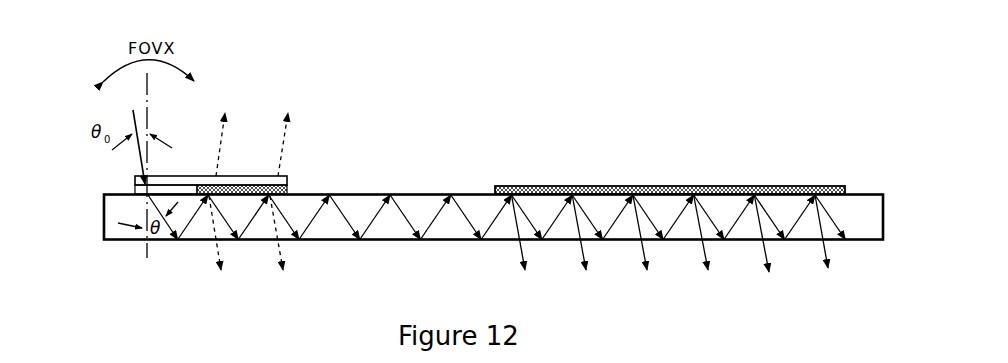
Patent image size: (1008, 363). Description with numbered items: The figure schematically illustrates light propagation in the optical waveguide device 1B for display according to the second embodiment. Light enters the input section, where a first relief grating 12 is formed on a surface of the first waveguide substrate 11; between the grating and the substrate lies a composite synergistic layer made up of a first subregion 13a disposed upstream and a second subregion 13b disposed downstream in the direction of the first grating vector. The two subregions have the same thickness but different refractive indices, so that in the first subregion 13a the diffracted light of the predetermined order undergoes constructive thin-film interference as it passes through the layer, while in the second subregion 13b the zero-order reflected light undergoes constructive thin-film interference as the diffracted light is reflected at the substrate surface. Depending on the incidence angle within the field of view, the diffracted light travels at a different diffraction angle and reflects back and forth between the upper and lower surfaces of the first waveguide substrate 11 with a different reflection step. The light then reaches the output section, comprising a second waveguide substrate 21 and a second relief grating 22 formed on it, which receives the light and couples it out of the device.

The optical waveguide device 1B is at (450, 90).
The first waveguide substrate 11 is at (340, 240).
The first relief grating 12 is at (242, 176).
The first subregion 13a is at (132, 192).
The second subregion 13b is at (290, 192).
The second waveguide substrate 21 is at (777, 240).
The second relief grating 22 is at (784, 186).